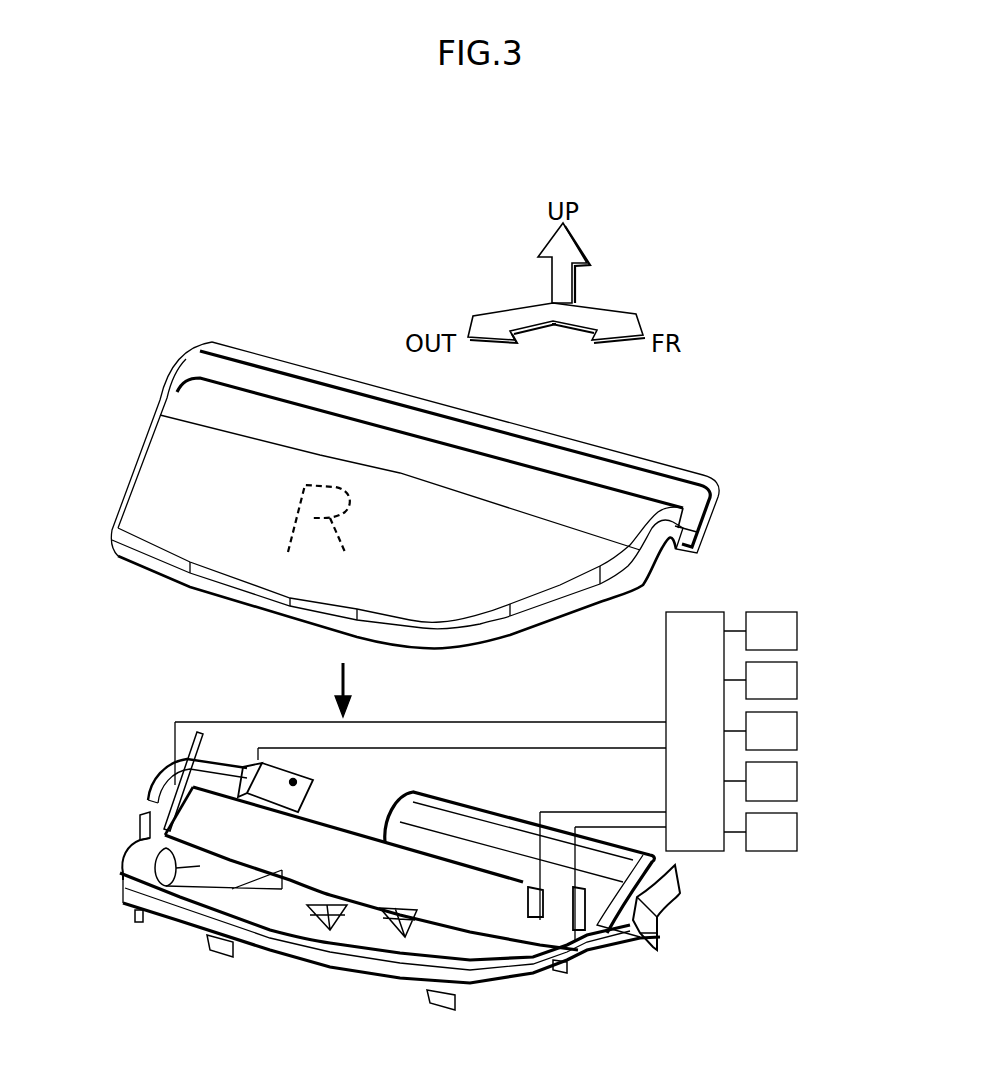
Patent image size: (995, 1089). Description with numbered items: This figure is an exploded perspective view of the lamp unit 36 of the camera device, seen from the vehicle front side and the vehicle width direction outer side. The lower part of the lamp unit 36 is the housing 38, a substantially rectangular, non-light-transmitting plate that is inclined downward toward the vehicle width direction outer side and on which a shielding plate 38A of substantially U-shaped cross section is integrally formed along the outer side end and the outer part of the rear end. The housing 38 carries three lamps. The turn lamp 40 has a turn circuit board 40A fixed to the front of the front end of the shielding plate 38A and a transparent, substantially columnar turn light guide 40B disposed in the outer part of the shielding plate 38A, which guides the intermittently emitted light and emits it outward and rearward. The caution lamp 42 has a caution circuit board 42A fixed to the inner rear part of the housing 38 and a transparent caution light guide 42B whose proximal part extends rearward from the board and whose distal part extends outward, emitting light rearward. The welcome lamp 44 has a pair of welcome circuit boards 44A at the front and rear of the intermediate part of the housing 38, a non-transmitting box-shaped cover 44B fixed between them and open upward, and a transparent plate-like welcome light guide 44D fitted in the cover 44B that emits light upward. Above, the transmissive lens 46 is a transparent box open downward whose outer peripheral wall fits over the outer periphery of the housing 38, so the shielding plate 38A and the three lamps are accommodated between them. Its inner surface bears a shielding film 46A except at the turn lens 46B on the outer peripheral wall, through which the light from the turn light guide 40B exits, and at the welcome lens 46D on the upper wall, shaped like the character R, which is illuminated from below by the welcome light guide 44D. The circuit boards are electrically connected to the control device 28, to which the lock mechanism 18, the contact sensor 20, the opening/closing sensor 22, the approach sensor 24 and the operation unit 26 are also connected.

The lock mechanism 18 is at (797, 632).
The contact sensor 20 is at (797, 680).
The opening/closing sensor 22 is at (797, 731).
The approach sensor 24 is at (797, 782).
The operation unit 26 is at (797, 833).
The control device 28 is at (666, 661).
The lamp unit 36 is at (698, 438).
The housing 38 is at (352, 797).
The shielding plate 38A is at (297, 907).
The turn lamp 40 is at (173, 908).
The turn circuit board 40A is at (590, 905).
The turn light guide 40B is at (390, 967).
The caution lamp 42 is at (158, 797).
The caution circuit board 42A is at (268, 765).
The caution light guide 42B is at (230, 750).
The welcome lamp 44 is at (437, 820).
The welcome circuit board 44A is at (143, 817).
The cover 44B is at (470, 857).
The welcome light guide 44D is at (462, 907).
The transmissive lens 46 is at (310, 370).
The shielding film 46A is at (555, 507).
The turn lens 46B is at (197, 583).
The welcome lens 46D is at (352, 520).